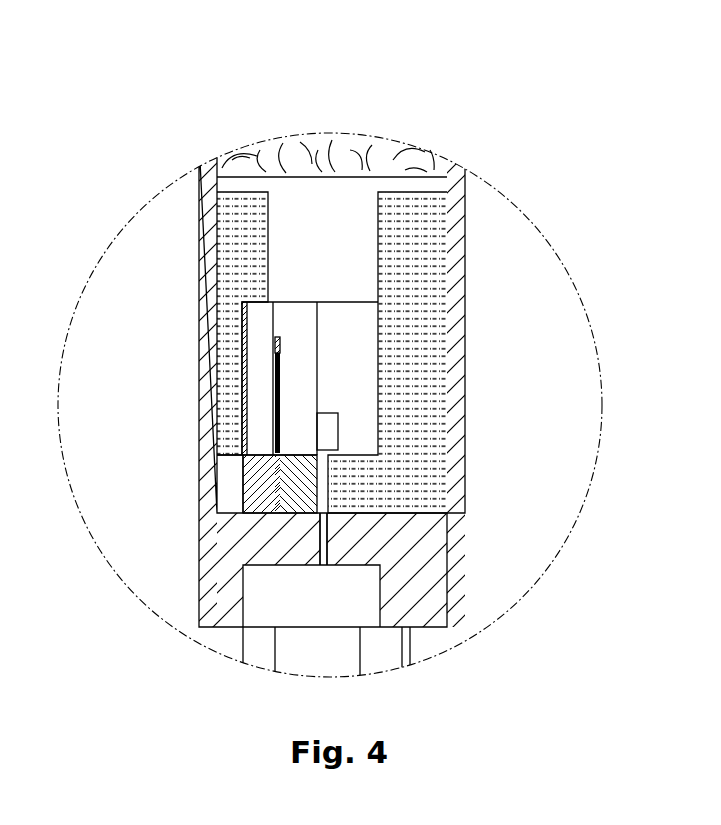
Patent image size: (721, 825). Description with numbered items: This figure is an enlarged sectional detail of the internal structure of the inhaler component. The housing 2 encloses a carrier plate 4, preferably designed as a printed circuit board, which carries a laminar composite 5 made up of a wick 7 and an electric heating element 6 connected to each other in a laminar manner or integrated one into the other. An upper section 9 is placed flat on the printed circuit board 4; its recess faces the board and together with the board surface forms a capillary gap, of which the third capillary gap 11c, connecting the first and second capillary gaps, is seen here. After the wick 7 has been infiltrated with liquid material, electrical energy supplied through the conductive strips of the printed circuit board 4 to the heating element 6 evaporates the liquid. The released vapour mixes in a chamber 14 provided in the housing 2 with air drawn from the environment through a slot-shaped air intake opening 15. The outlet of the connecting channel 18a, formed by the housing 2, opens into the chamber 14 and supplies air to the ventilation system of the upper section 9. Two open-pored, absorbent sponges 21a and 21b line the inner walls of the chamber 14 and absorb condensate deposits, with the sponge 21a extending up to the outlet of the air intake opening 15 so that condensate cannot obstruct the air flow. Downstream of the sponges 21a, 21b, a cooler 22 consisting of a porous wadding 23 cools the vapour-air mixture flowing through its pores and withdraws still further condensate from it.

The housing 2 is at (455, 290).
The carrier plate 4 is at (255, 332).
The laminar composite 5 is at (272, 378).
The electric heating element 6 is at (266, 378).
The wick 7 is at (266, 378).
The upper section 9 is at (302, 343).
The third capillary gap 11c is at (275, 485).
The chamber 14 is at (323, 260).
The air intake opening 15 is at (320, 553).
The connecting channel 18a is at (332, 430).
The sponge 21a is at (408, 407).
The sponge 21b is at (242, 237).
The cooler 22 is at (323, 157).
The porous wadding 23 is at (323, 157).